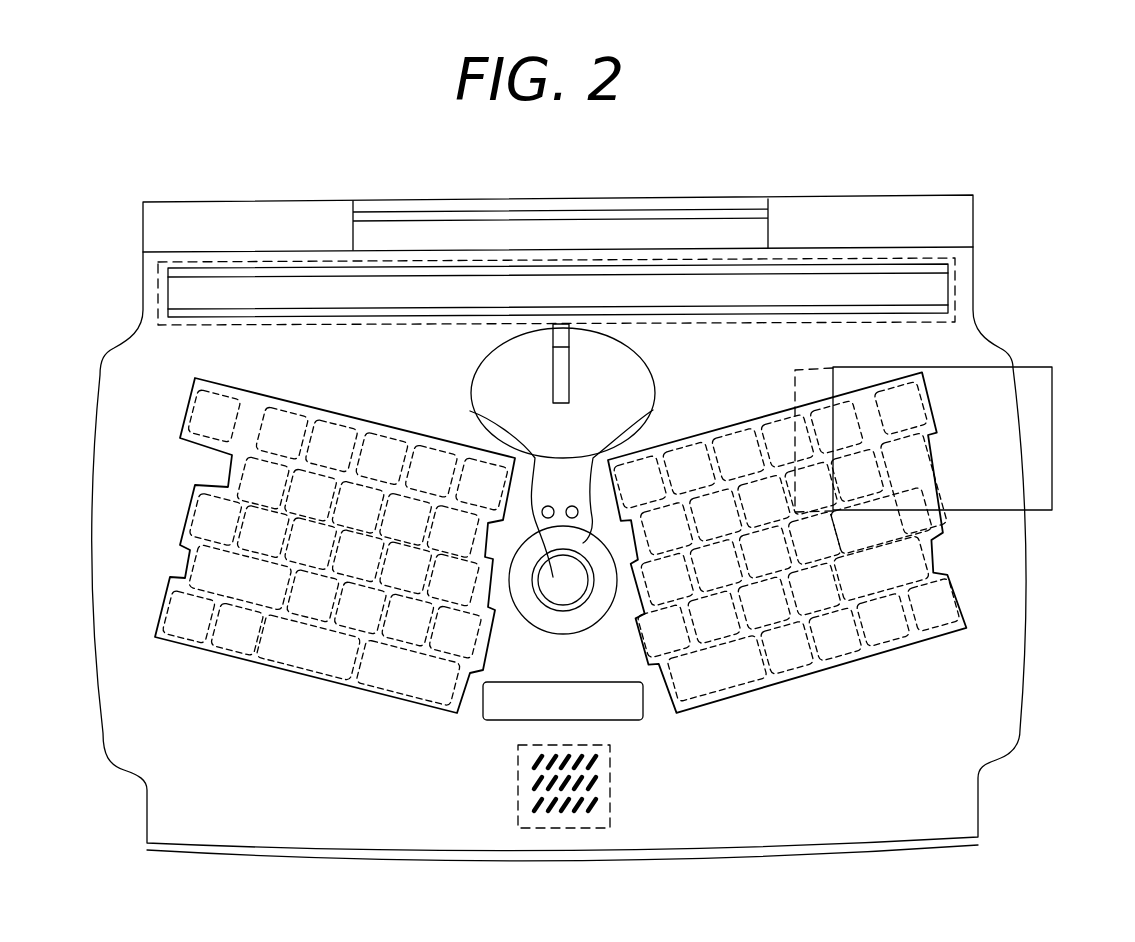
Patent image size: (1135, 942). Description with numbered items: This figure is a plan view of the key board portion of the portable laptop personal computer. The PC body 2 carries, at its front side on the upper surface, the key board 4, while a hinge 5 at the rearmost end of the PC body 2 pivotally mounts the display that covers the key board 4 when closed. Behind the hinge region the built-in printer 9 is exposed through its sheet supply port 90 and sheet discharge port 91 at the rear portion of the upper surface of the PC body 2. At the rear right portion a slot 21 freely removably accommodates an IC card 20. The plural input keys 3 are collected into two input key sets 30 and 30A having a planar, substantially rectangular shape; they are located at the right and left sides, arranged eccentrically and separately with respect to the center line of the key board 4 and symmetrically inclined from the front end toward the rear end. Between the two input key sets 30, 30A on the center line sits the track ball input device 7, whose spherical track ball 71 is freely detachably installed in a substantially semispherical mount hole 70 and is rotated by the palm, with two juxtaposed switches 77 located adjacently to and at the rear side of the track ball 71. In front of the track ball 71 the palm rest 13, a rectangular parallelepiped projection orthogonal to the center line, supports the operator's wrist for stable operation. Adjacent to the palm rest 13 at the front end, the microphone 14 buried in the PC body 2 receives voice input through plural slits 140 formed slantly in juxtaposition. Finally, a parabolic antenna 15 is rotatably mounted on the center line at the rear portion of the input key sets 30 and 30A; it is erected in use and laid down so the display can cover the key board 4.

The PC body 2 is at (986, 181).
The input keys 3 is at (387, 677).
The key board 4 is at (1005, 656).
The hinge 5 is at (710, 232).
The track ball input device 7 is at (571, 633).
The built-in printer 9 is at (228, 262).
The sheet supply port 90 is at (307, 270).
The sheet discharge port 91 is at (300, 318).
The palm rest 13 is at (508, 713).
The microphone 14 is at (613, 802).
The slits 140 is at (597, 783).
The parabolic antenna 15 is at (652, 372).
The IC card 20 is at (1052, 427).
The slot 21 is at (815, 368).
The input key set 30 is at (185, 553).
The input key set 30A is at (932, 558).
The mount hole 70 is at (653, 410).
The track ball 71 is at (470, 411).
The switches 77 is at (572, 506).